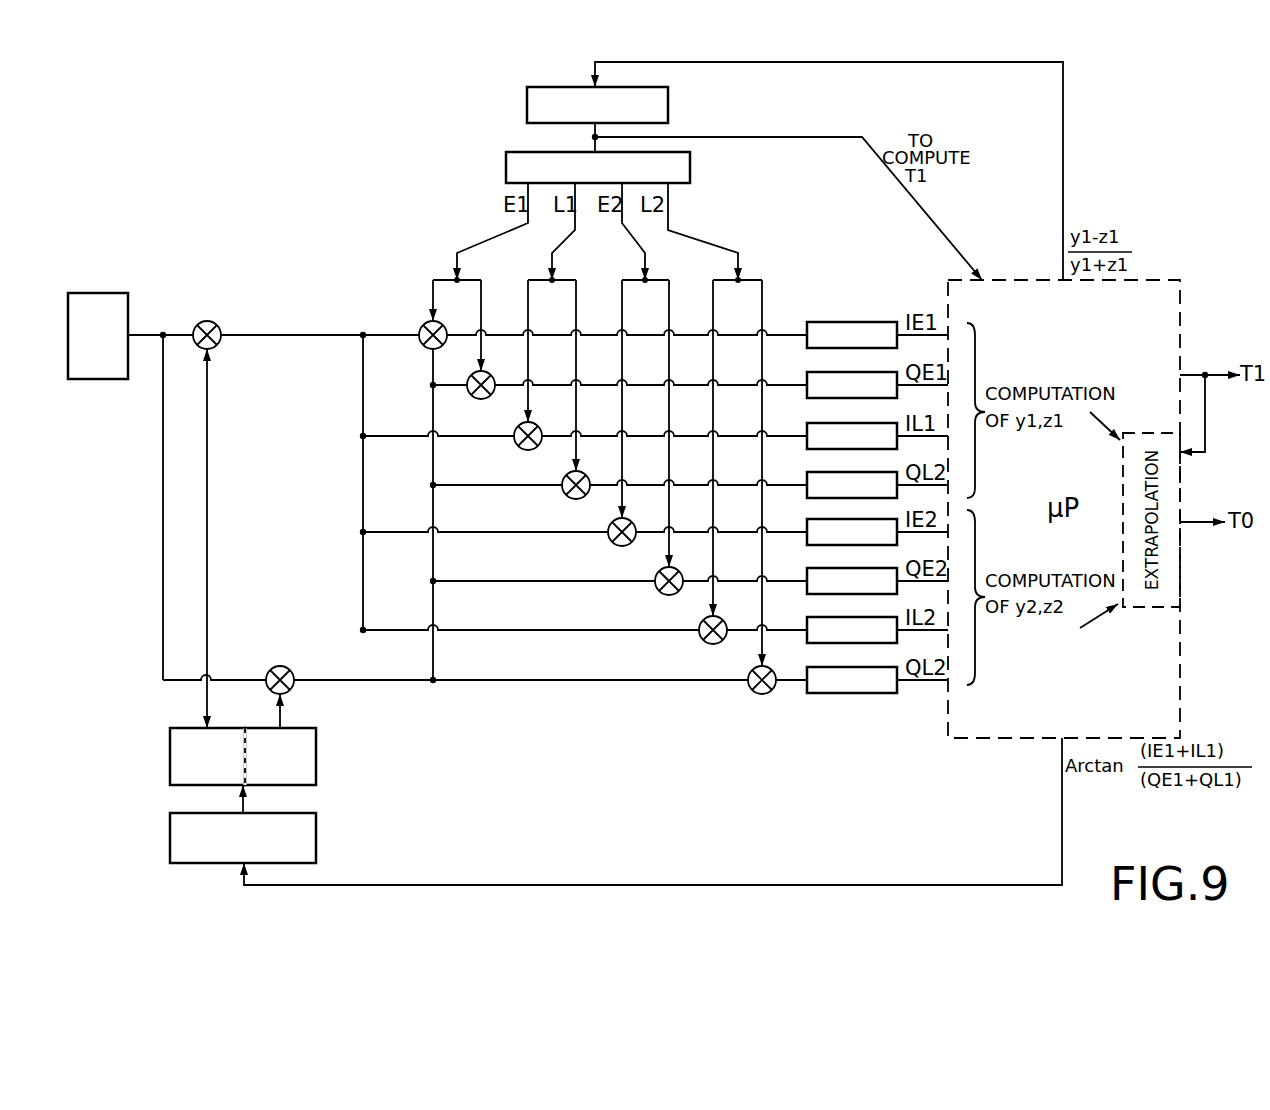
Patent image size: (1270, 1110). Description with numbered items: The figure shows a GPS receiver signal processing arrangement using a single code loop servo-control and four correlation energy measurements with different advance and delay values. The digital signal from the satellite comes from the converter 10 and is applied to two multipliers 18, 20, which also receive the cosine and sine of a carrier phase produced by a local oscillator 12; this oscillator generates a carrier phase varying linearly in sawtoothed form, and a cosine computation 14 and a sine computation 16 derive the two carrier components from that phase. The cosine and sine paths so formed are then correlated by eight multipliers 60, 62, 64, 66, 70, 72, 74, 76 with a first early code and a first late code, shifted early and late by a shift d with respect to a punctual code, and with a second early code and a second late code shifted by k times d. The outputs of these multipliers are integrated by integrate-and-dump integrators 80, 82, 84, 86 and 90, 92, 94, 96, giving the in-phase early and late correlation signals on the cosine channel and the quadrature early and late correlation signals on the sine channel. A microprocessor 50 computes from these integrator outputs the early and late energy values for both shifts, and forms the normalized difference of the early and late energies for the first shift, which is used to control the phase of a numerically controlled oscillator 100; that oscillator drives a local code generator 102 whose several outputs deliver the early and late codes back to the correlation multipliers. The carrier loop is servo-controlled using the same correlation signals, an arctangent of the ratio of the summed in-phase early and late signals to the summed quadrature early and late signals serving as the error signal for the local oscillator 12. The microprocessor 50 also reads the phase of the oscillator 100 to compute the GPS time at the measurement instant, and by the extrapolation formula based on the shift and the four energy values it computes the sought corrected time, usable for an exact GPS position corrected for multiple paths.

The converter 10 is at (112, 293).
The local oscillator 12 is at (316, 832).
The cosine computation 14 is at (170, 760).
The sine computation 16 is at (316, 760).
The multiplier 18 is at (217, 325).
The multiplier 20 is at (274, 664).
The microprocessor 50 is at (1180, 305).
The multiplier 60 is at (422, 325).
The multiplier 62 is at (469, 378).
The multiplier 64 is at (514, 428).
The multiplier 66 is at (562, 478).
The multiplier 70 is at (610, 526).
The multiplier 72 is at (658, 575).
The multiplier 74 is at (701, 623).
The multiplier 76 is at (749, 675).
The integrator 80 is at (834, 322).
The integrator 82 is at (822, 372).
The integrator 84 is at (819, 423).
The integrator 86 is at (819, 472).
The integrator 90 is at (818, 519).
The integrator 92 is at (820, 568).
The integrator 94 is at (813, 617).
The integrator 96 is at (824, 667).
The numerically controlled oscillator 100 is at (668, 105).
The local code generator 102 is at (690, 170).